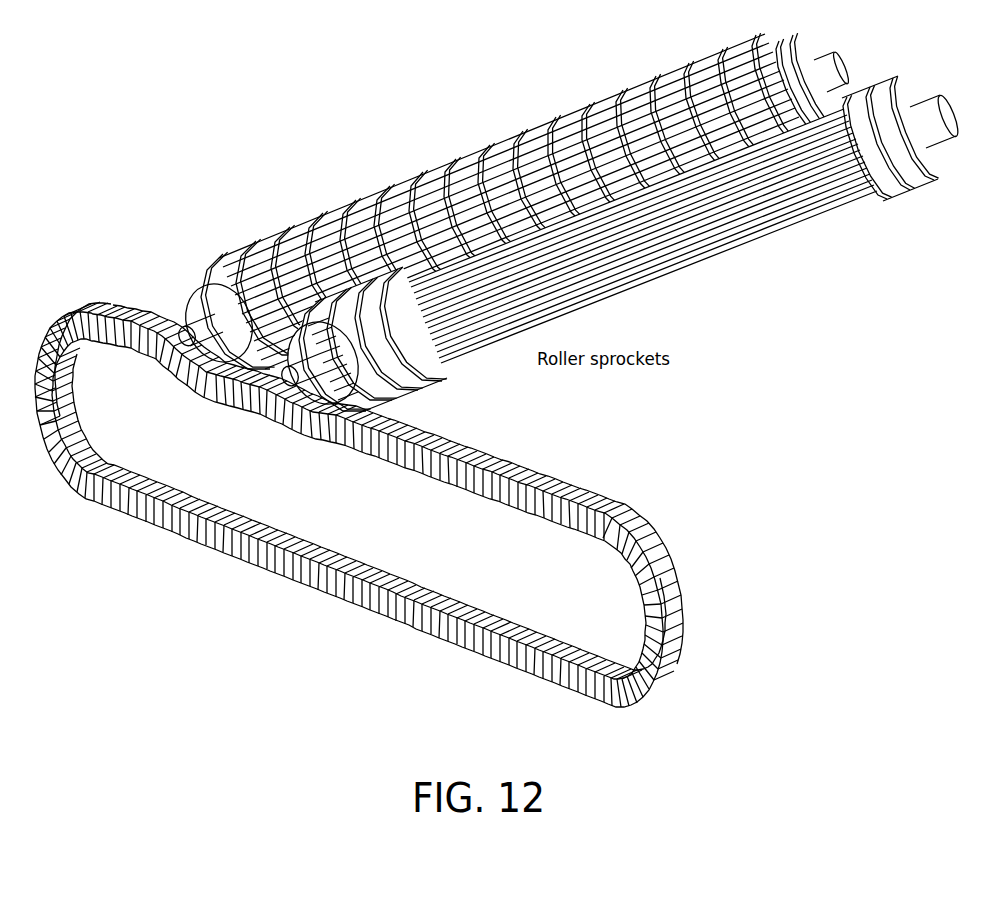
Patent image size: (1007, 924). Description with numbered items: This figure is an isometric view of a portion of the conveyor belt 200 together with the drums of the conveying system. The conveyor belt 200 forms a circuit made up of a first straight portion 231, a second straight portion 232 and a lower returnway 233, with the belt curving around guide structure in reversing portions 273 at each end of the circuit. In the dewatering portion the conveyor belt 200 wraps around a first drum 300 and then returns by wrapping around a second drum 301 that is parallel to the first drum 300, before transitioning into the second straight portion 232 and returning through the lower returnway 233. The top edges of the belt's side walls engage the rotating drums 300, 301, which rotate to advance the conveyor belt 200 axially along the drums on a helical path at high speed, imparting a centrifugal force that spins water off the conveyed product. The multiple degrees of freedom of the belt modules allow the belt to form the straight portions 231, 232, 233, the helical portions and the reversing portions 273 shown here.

The conveyor belt 200 is at (359, 482).
The first straight portion 231 is at (503, 453).
The second straight portion 232 is at (125, 300).
The lower returnway 233 is at (283, 573).
The reversing portion 273 is at (83, 374).
The first drum 300 is at (737, 237).
The second drum 301 is at (197, 302).